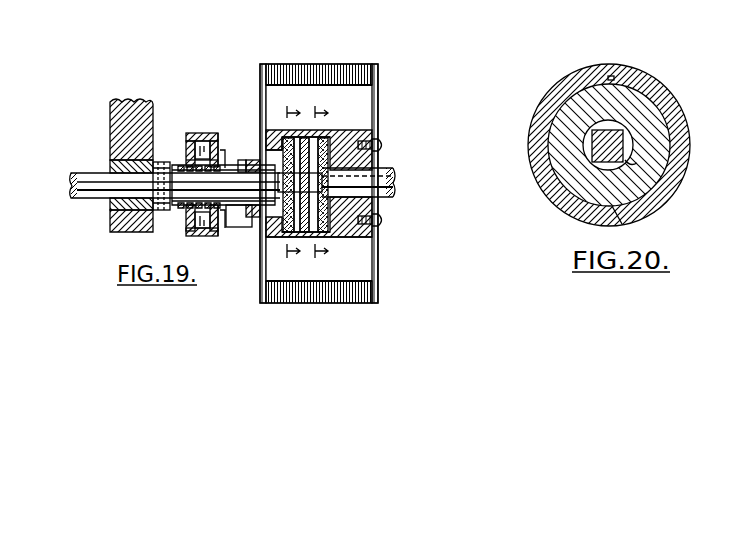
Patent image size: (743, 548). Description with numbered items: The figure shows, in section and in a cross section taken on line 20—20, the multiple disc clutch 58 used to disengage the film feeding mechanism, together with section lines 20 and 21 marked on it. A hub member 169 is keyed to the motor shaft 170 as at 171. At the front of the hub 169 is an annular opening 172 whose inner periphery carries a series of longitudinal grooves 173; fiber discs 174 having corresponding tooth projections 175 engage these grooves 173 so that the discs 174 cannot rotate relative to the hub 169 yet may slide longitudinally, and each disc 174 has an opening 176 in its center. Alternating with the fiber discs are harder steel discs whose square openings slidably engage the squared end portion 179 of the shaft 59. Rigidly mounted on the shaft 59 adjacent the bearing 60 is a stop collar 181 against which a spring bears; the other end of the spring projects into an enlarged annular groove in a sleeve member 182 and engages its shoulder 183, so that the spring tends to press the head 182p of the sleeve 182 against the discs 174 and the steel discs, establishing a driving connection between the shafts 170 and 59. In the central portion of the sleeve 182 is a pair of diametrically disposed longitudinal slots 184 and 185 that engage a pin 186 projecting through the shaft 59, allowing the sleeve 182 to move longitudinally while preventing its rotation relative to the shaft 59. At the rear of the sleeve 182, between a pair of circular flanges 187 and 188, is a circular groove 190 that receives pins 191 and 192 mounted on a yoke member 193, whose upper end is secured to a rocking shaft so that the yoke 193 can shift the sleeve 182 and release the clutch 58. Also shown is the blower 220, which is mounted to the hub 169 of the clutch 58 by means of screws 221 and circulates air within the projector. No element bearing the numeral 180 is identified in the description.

In FIG. 19, the clutch 58 is at (259, 272).
In FIG. 19, the shaft 59 is at (88, 173).
In FIG. 19, the bearing 60 is at (141, 232).
In FIG. 19, the hub member 169 is at (371, 125).
In FIG. 20, the hub member 169 is at (668, 97).
In FIG. 19, the motor shaft 170 is at (393, 168).
In FIG. 19, the key 171 is at (385, 147).
In FIG. 19, the annular opening 172 is at (270, 150).
In FIG. 19, the longitudinal grooves 173 is at (320, 136).
In FIG. 20, the longitudinal grooves 173 is at (614, 76).
In FIG. 19, the discs 174 is at (272, 238).
In FIG. 20, the discs 174 is at (668, 119).
In FIG. 20, the tooth projections 175 is at (624, 223).
In FIG. 20, the openings 176 is at (637, 163).
In FIG. 19, the squared end portion 179 is at (303, 185).
In FIG. 20, the squared end portion 179 is at (590, 158).
In FIG. 19, the collar 180 is at (162, 162).
In FIG. 19, the stop collar 181 is at (184, 210).
In FIG. 19, the sleeve member 182 is at (252, 208).
In FIG. 19, the head 182p is at (259, 160).
In FIG. 19, the shoulder 183 is at (226, 150).
In FIG. 19, the longitudinal slot 184 is at (253, 160).
In FIG. 19, the longitudinal slot 185 is at (262, 222).
In FIG. 19, the pin 186 is at (252, 172).
In FIG. 19, the circular flange 187 is at (187, 138).
In FIG. 19, the circular flange 188 is at (214, 138).
In FIG. 19, the circular groove 190 is at (203, 236).
In FIG. 19, the pin 191 is at (220, 236).
In FIG. 19, the pin 192 is at (199, 140).
In FIG. 19, the yoke member 193 is at (227, 232).
In FIG. 19, the blower 220 is at (373, 70).
In FIG. 19, the screws 221 is at (385, 221).
In FIG. 19, the section line 20— 20 is at (298, 185).
In FIG. 19, the section line 21— 21 is at (324, 185).